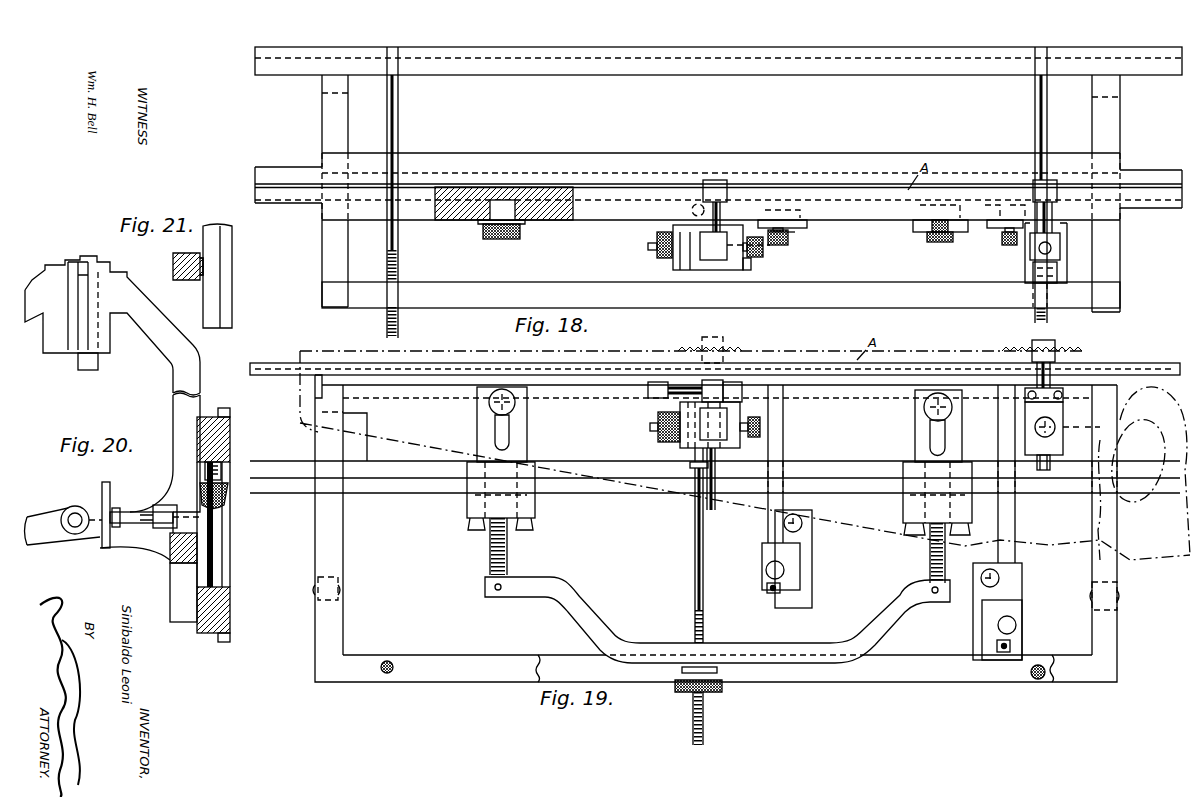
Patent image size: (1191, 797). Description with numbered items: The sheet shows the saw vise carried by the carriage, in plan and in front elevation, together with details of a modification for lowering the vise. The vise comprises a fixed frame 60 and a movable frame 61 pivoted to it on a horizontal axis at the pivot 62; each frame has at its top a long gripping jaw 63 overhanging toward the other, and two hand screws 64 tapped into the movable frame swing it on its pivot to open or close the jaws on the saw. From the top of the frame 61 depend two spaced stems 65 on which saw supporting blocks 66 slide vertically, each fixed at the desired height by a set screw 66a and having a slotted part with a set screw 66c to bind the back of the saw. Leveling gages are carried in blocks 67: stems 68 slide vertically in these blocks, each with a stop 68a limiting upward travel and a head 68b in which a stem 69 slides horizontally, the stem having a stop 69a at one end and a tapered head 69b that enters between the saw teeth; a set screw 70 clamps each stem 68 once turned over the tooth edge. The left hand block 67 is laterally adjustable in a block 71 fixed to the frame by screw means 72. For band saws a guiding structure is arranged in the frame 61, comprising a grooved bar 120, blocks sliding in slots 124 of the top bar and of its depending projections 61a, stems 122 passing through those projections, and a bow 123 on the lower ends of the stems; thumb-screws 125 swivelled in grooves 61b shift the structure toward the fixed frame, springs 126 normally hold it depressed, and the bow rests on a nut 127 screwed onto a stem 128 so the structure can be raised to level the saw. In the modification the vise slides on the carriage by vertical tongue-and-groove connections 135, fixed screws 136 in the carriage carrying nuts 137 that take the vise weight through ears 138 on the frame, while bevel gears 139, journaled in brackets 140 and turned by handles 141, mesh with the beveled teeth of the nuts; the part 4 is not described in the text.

In FIG. 18, the fixed frame 60 is at (838, 75).
In FIG. 19, the fixed frame 60 is at (962, 682).
In FIG. 20, the fixed frame 60 is at (200, 370).
In FIG. 21, the fixed frame 60 is at (186, 283).
In FIG. 18, the movable frame 61 is at (825, 288).
In FIG. 19, the movable frame 61 is at (1117, 628).
In FIG. 19, the depending projections 61a is at (903, 507).
In FIG. 18, the grooves 61b is at (915, 232).
In FIG. 19, the pivot 62 is at (1092, 597).
In FIG. 18, the gripping jaw 63 is at (613, 183).
In FIG. 18, the hand screws 64 is at (398, 124).
In FIG. 19, the hand screws 64 is at (1038, 680).
In FIG. 19, the stems 65 is at (783, 440).
In FIG. 18, the saw supporting blocks 66 is at (770, 212).
In FIG. 19, the saw supporting blocks 66 is at (812, 577).
In FIG. 18, the set screw 66a is at (789, 239).
In FIG. 19, the set screw 66a is at (768, 580).
In FIG. 18, the set screw 66c is at (808, 226).
In FIG. 19, the set screw 66c is at (803, 523).
In FIG. 18, the blocks 67 is at (750, 265).
In FIG. 19, the blocks 67 is at (738, 448).
In FIG. 19, the stems 68 is at (715, 507).
In FIG. 19, the stop 68a is at (695, 505).
In FIG. 18, the head 68b is at (1062, 250).
In FIG. 19, the head 68b is at (715, 378).
In FIG. 18, the stem 69 is at (1052, 215).
In FIG. 19, the stem 69 is at (658, 398).
In FIG. 18, the stop 69a is at (1057, 277).
In FIG. 19, the stop 69a is at (742, 392).
In FIG. 18, the tapered head 69b is at (1058, 188).
In FIG. 19, the tapered head 69b is at (648, 391).
In FIG. 18, the set screw 70 is at (765, 248).
In FIG. 19, the set screw 70 is at (760, 425).
In FIG. 18, the block 71 is at (688, 273).
In FIG. 19, the block 71 is at (680, 445).
In FIG. 18, the screw means 72 is at (652, 252).
In FIG. 19, the screw means 72 is at (652, 428).
In FIG. 18, the bar 120 is at (527, 221).
In FIG. 19, the bar 120 is at (1118, 390).
In FIG. 19, the stems 122 is at (930, 565).
In FIG. 19, the bow 123 is at (874, 625).
In FIG. 19, the slots 124 is at (905, 527).
In FIG. 18, the thumb-screws 125 is at (940, 243).
In FIG. 19, the thumb-screws 125 is at (912, 408).
In FIG. 19, the springs 126 is at (930, 538).
In FIG. 19, the nut 127 is at (715, 694).
In FIG. 19, the stem 128 is at (690, 578).
In FIG. 21, the tongue-and-groove connections 135 is at (206, 262).
In FIG. 20, the fixed screws 136 is at (223, 553).
In FIG. 20, the nuts 137 is at (228, 493).
In FIG. 20, the ears 138 is at (215, 470).
In FIG. 20, the bevel gears 139 is at (170, 563).
In FIG. 20, the brackets 140 is at (173, 510).
In FIG. 20, the handles 141 is at (104, 549).
In FIG. 20, the bar 4 is at (218, 432).
In FIG. 21, the bar 4 is at (232, 300).